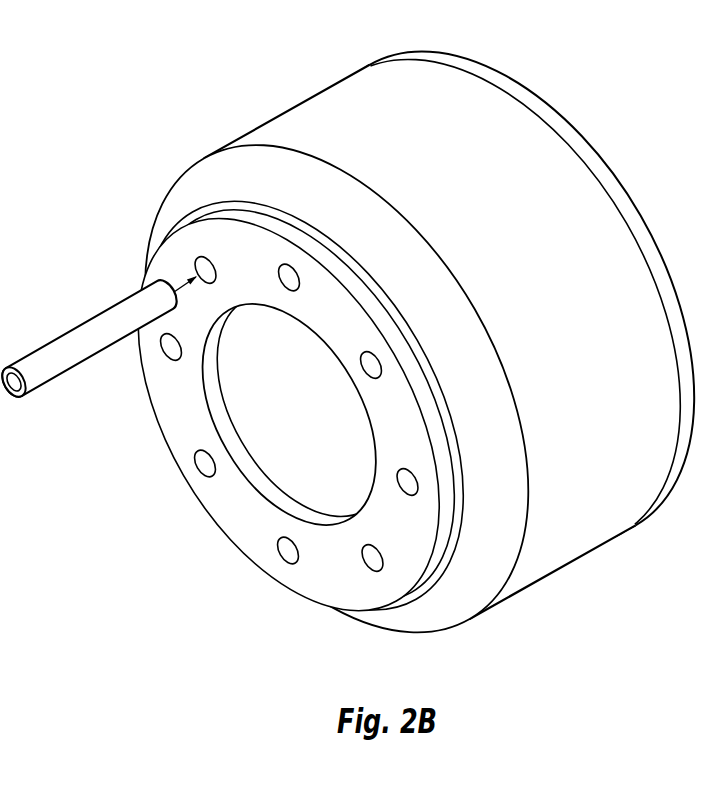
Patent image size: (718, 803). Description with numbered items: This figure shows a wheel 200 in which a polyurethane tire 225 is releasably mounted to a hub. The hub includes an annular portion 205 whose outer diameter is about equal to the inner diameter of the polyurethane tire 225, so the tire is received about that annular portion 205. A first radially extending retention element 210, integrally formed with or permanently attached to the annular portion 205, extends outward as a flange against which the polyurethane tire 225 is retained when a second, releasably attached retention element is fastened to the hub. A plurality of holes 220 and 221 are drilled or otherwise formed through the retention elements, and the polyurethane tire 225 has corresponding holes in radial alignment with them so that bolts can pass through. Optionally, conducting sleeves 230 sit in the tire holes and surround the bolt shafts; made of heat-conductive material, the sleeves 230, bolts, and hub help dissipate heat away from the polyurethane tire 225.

The wheel 200 is at (359, 349).
The annular portion 205 is at (250, 392).
The first radially extending retention element 210 is at (222, 508).
The holes 220 is at (0, 164).
The holes 221 is at (365, 567).
The polyurethane tire 225 is at (478, 580).
The conducting sleeves 230 is at (115, 302).